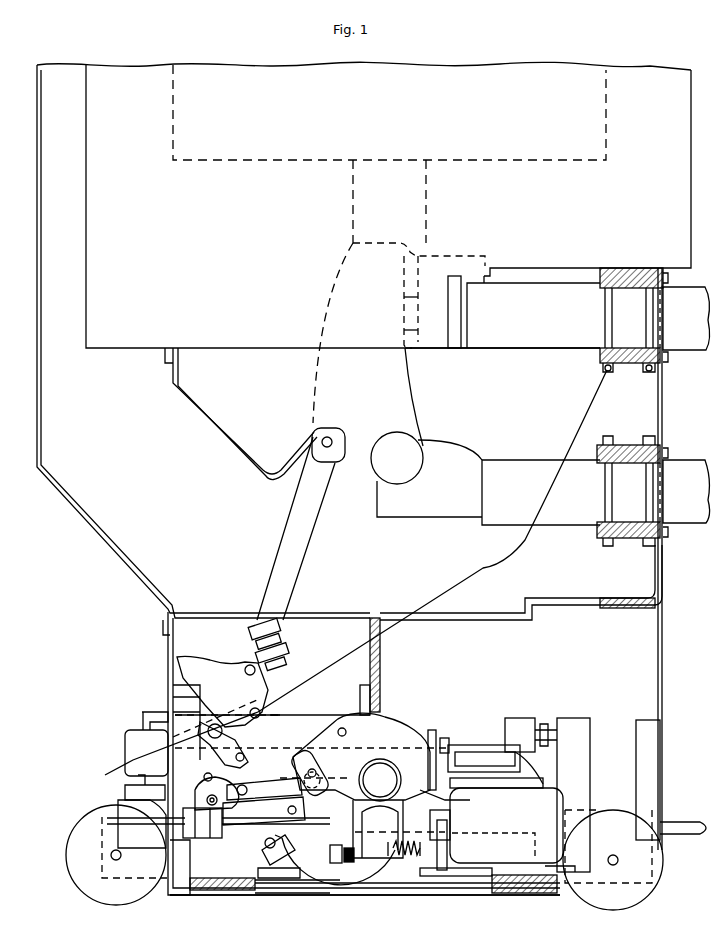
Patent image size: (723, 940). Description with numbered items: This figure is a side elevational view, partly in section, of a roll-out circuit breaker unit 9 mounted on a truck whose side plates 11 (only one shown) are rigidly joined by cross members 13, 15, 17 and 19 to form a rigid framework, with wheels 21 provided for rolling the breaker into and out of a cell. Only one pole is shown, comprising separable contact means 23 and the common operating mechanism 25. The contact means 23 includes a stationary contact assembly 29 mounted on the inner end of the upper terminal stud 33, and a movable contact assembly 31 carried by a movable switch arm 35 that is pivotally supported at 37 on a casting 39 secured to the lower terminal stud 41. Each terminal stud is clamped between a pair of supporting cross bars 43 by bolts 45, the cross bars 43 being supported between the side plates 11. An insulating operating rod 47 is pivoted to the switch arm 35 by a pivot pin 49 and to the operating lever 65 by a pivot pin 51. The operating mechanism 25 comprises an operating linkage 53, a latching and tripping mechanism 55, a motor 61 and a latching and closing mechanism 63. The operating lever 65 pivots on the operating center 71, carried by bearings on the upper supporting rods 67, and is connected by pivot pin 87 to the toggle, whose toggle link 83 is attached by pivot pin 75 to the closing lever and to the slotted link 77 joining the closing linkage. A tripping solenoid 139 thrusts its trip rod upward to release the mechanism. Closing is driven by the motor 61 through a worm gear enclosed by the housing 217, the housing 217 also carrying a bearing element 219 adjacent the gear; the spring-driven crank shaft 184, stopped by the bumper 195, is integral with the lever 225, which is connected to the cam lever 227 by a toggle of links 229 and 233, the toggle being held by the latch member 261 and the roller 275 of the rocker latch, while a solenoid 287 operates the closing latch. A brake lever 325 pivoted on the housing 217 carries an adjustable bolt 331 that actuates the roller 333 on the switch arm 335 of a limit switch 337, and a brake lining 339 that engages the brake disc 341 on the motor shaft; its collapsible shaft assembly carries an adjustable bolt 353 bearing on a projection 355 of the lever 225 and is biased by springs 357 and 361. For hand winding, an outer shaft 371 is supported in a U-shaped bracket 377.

The circuit breaker unit 9 is at (122, 630).
The side plates 11 is at (648, 651).
The cross member 13 is at (217, 891).
The cross member 15 is at (512, 894).
The cross member 17 is at (381, 662).
The cross member 19 is at (614, 614).
The wheels 21 is at (76, 887).
The contact means 23 is at (293, 381).
The operating mechanism 25 is at (316, 709).
The stationary contact assembly 29 is at (432, 258).
The movable contact assembly 31 is at (345, 300).
The upper terminal stud 33 is at (535, 348).
The movable switch arm 35 is at (409, 389).
The pivot 37 is at (403, 481).
The casting 39 is at (450, 444).
The lower terminal stud 41 is at (503, 462).
The supporting cross bars 43 is at (605, 292).
The bolts 45 is at (640, 300).
The insulating operating rod 47 is at (278, 551).
The pivot pins 49 is at (332, 450).
The pivot pins 51 is at (244, 672).
The operating linkage 53 is at (296, 667).
The latching and tripping mechanism 55 is at (150, 695).
The motor 61 is at (504, 814).
The latching and closing mechanism 63 is at (168, 778).
The operating lever 65 is at (203, 661).
The upper supporting rods 67 is at (507, 719).
The operating center 71 is at (222, 733).
The pivot pin 75 is at (236, 790).
The slotted link 77 is at (265, 783).
The toggle link 83 is at (247, 756).
The pivot pin 87 is at (262, 712).
The tripping solenoid 139 is at (152, 752).
The crank shaft 184 is at (316, 918).
The bumper 195 is at (585, 757).
The housing 217 is at (393, 722).
The bearing 219 is at (368, 774).
The lever 225 is at (284, 884).
The cam lever 227 is at (320, 755).
The link 229 is at (262, 872).
The link 233 is at (325, 796).
The latch member 261 is at (264, 811).
The roller 275 is at (204, 777).
The solenoid 287 is at (154, 841).
The brake lever 325 is at (394, 822).
The adjustable bolt 331 is at (433, 730).
The roller 333 is at (445, 737).
The switch arm 335 is at (438, 768).
The limit switch 337 is at (497, 763).
The brake lining 339 is at (448, 824).
The brake disc 341 is at (440, 860).
The adjustable bolt 353 is at (340, 866).
The projection 355 is at (302, 882).
The spring 357 is at (352, 864).
The spring 361 is at (405, 860).
The outer shaft 371 is at (265, 841).
The U-shaped bracket 377 is at (265, 855).